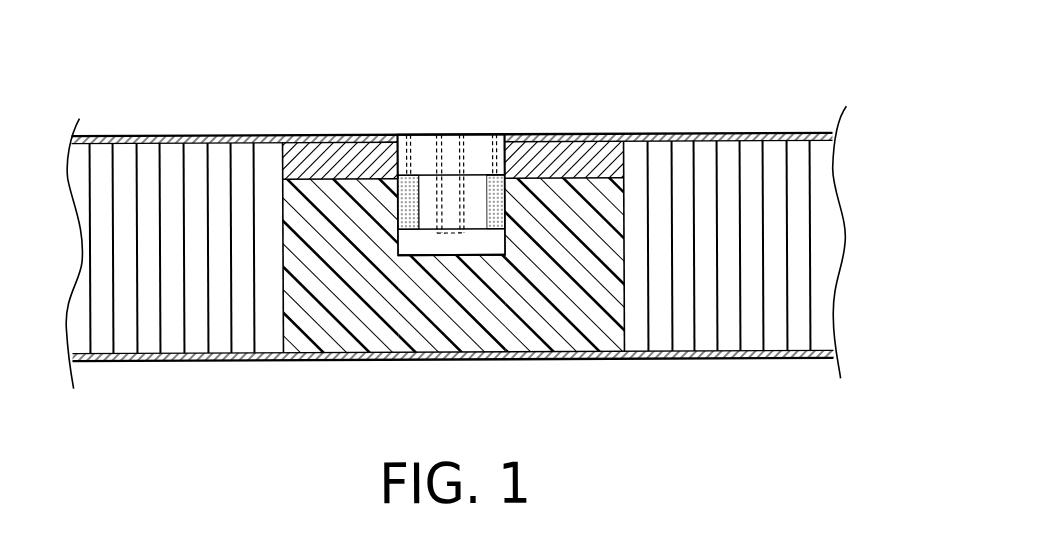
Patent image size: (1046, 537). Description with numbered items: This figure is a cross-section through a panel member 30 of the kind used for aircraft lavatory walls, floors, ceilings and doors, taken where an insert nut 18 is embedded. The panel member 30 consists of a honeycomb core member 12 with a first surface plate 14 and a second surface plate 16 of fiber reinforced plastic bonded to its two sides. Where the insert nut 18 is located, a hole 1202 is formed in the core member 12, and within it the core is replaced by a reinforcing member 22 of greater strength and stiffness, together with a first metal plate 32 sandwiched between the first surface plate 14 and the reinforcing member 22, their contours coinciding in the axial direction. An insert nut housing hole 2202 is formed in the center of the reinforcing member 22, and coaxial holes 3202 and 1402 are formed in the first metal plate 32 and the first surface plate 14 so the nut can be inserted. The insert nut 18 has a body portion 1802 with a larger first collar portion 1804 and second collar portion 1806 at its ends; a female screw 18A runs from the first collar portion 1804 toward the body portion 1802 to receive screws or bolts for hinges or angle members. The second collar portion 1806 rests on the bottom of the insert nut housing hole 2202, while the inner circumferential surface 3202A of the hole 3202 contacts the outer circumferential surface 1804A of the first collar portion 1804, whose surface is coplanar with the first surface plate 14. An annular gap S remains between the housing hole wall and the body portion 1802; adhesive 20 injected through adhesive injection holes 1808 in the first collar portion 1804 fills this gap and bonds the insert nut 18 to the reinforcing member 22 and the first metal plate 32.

The core member 12 is at (149, 163).
The first surface plate 14 is at (200, 137).
The second surface plate 16 is at (177, 360).
The insert nut 18 is at (478, 145).
The female screw 18A is at (445, 150).
The body portion 1802 is at (415, 224).
The first collar portion 1804 is at (430, 145).
The outer circumferential surface 1804A is at (507, 150).
The second collar portion 1806 is at (445, 242).
The adhesive injection holes 1808 is at (503, 134).
The adhesive 20 is at (365, 290).
The reinforcing member 22 is at (568, 305).
The insert nut housing hole 2202 is at (492, 256).
The panel member 30 is at (745, 126).
The first metal plate 32 is at (604, 152).
The hole 3202 is at (395, 146).
The inner circumferential surface 3202A is at (412, 134).
The hole 1202 is at (285, 212).
The hole 1402 is at (400, 140).
The annular gap S is at (396, 232).